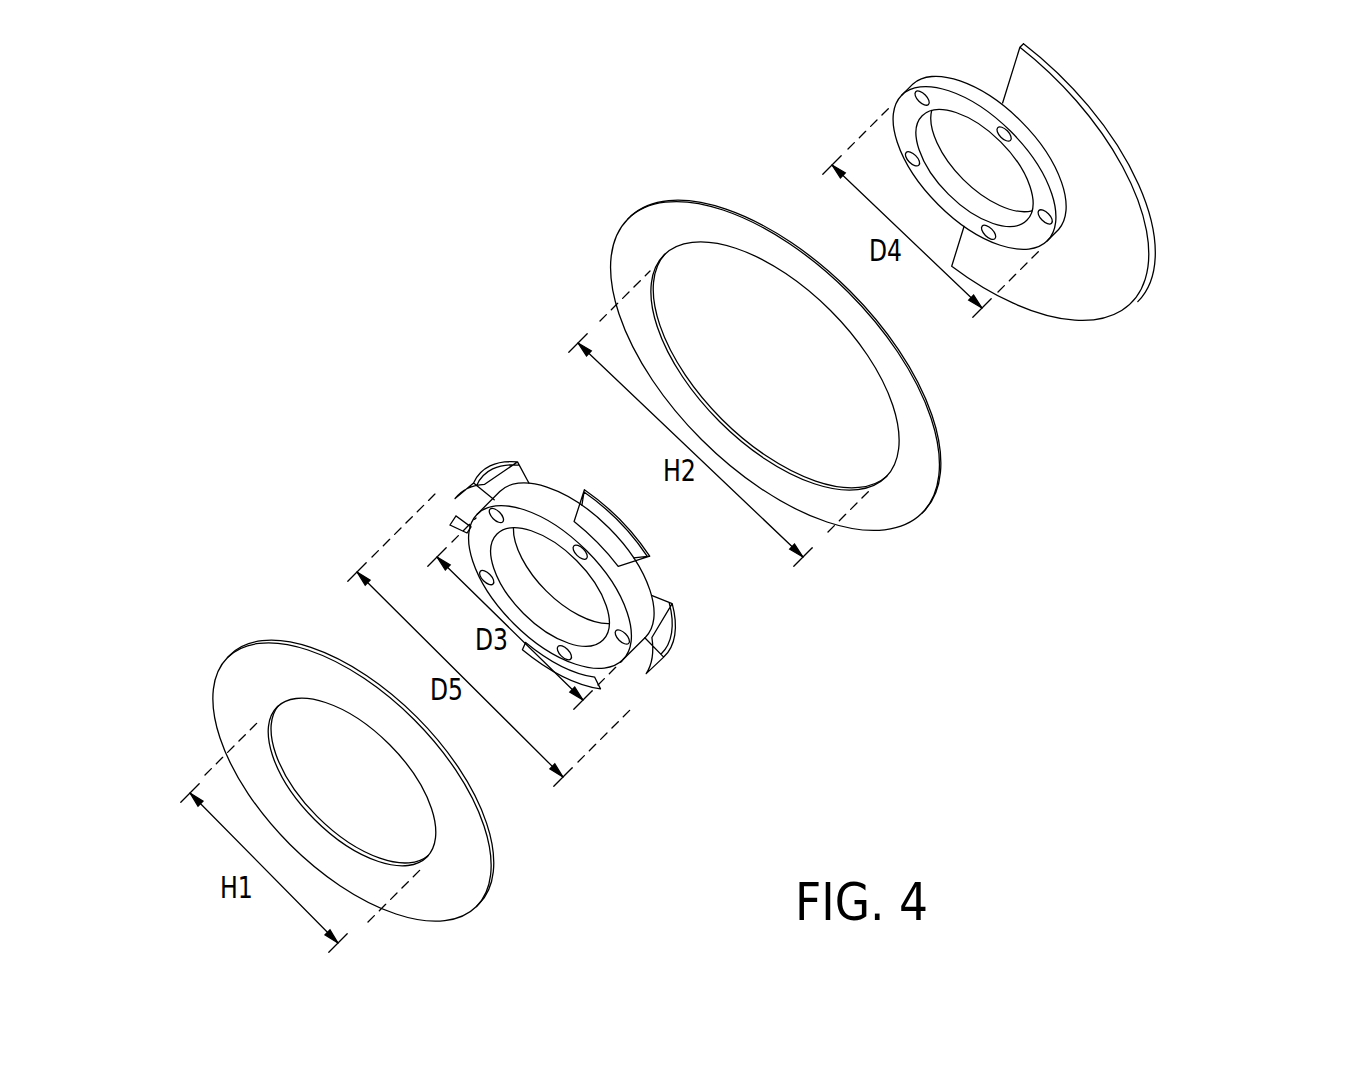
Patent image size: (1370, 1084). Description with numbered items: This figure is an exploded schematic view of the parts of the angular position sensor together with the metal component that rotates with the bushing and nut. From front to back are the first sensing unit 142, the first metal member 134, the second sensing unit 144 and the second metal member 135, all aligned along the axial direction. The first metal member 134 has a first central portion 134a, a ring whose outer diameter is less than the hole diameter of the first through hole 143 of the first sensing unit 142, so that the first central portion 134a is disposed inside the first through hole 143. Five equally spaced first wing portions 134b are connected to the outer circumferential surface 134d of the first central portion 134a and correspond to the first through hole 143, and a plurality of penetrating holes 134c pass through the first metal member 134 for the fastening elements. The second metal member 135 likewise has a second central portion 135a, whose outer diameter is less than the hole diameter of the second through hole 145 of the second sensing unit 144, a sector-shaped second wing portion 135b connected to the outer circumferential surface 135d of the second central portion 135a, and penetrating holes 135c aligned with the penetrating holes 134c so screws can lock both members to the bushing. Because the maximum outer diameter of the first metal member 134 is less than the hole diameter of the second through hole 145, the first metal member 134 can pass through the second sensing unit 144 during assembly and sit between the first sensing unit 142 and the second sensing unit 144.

The first metal member 134 is at (613, 594).
The first central portion 134a is at (487, 528).
The first wing portions 134b is at (664, 667).
The penetrating holes 134c is at (618, 647).
The outer circumferential surface 134d is at (641, 585).
The second metal member 135 is at (1067, 206).
The second central portion 135a is at (903, 131).
The second wing portion 135b is at (1100, 280).
The penetrating holes 135c is at (1048, 223).
The outer circumferential surface 135d is at (1048, 167).
The first sensing unit 142 is at (453, 877).
The first through hole 143 is at (316, 720).
The second sensing unit 144 is at (890, 507).
The second through hole 145 is at (710, 278).